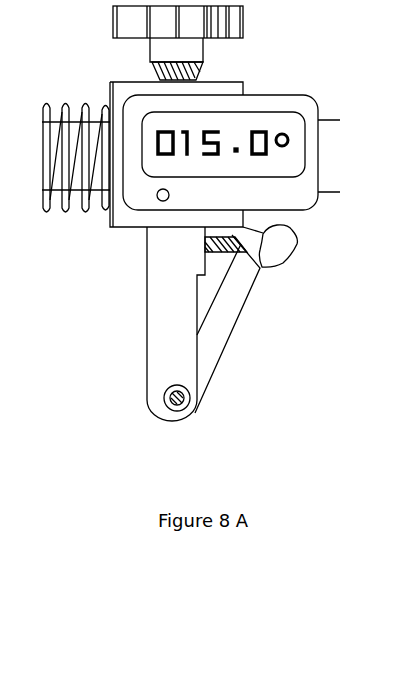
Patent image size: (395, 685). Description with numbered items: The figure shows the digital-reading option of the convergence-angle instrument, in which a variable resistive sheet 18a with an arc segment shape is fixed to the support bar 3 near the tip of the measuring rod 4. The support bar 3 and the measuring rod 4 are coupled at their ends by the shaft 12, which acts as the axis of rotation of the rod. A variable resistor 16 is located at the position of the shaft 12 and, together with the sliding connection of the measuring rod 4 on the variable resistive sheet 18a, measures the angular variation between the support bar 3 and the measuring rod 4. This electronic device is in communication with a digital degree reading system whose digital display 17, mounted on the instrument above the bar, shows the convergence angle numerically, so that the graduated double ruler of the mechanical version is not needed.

The digital display 17 is at (245, 113).
The support bar 3 is at (164, 315).
The measuring rod 4 is at (237, 291).
The variable resistive sheet 18a is at (272, 270).
The shaft 12 is at (166, 396).
The variable resistor 16 is at (166, 405).